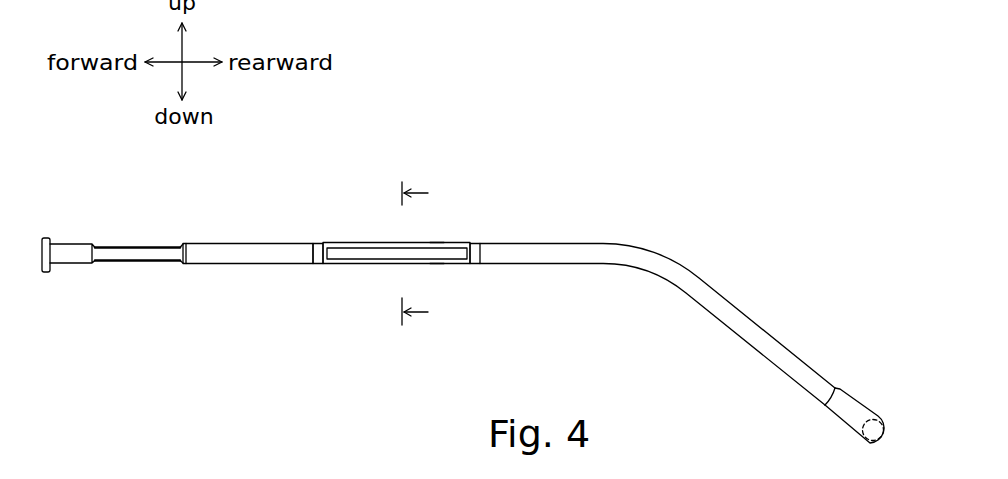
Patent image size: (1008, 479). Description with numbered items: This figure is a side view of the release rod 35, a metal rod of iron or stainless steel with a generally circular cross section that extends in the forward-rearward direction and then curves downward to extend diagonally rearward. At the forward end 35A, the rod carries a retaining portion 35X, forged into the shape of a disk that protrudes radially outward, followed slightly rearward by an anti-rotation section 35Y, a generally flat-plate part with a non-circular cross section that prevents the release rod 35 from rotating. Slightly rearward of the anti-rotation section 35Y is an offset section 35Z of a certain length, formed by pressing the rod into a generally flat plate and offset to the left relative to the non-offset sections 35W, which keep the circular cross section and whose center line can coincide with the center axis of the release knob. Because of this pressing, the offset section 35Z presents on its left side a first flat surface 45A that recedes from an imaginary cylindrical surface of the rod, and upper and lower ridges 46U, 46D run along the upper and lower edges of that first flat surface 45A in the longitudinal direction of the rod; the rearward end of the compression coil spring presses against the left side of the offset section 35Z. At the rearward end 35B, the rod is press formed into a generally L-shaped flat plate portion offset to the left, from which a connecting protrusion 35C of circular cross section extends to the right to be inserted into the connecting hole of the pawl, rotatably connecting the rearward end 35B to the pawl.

The release rod 35 is at (623, 192).
The retaining portion 35X is at (45, 236).
The anti-rotation section 35Y is at (134, 251).
The offset section 35Z is at (353, 242).
The non-offset sections 35W is at (233, 264).
The forward end 35A is at (65, 283).
The rearward end 35B is at (820, 428).
The connecting protrusion 35C is at (873, 419).
The first flat surface 45A is at (385, 253).
The upper ridge 46U is at (437, 242).
The lower ridge 46D is at (435, 264).